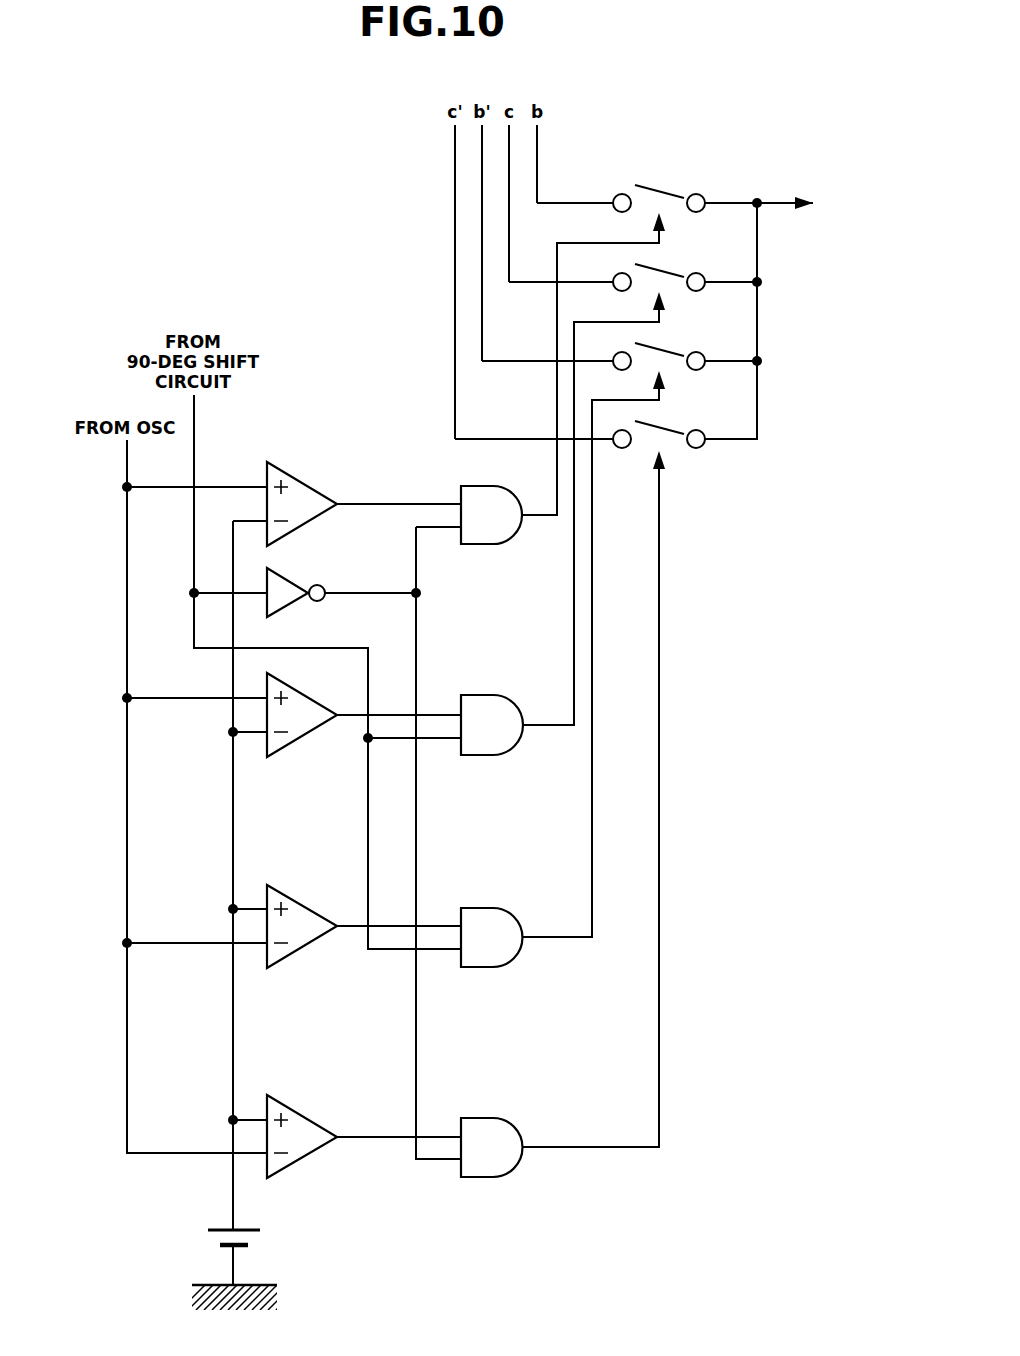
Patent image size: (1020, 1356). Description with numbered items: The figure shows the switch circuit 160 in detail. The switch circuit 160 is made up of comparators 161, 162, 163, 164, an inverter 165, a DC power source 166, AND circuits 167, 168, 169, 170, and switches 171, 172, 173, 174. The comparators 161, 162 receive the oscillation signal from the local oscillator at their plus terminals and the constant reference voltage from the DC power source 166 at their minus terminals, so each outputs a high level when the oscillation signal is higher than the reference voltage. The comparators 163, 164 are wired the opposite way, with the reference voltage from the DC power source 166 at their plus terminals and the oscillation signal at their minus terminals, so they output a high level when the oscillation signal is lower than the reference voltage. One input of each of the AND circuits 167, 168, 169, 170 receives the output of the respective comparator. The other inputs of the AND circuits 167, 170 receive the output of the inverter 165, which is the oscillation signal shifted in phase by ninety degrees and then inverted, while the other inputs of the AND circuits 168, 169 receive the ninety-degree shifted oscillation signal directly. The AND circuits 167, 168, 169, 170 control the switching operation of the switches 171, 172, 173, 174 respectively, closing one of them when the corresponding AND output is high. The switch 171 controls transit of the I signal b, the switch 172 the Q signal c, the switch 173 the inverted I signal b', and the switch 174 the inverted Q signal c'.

The switch circuit 160 is at (698, 640).
The comparator 161 is at (312, 480).
The comparator 162 is at (312, 693).
The comparator 163 is at (305, 902).
The comparator 164 is at (305, 1112).
The inverter 165 is at (305, 582).
The DC power source 166 is at (218, 1228).
The AND circuit 167 is at (490, 544).
The AND circuit 168 is at (505, 755).
The AND circuit 169 is at (508, 967).
The AND circuit 170 is at (508, 1177).
The switch 171 is at (705, 193).
The switch 172 is at (705, 272).
The switch 173 is at (705, 351).
The switch 174 is at (705, 429).